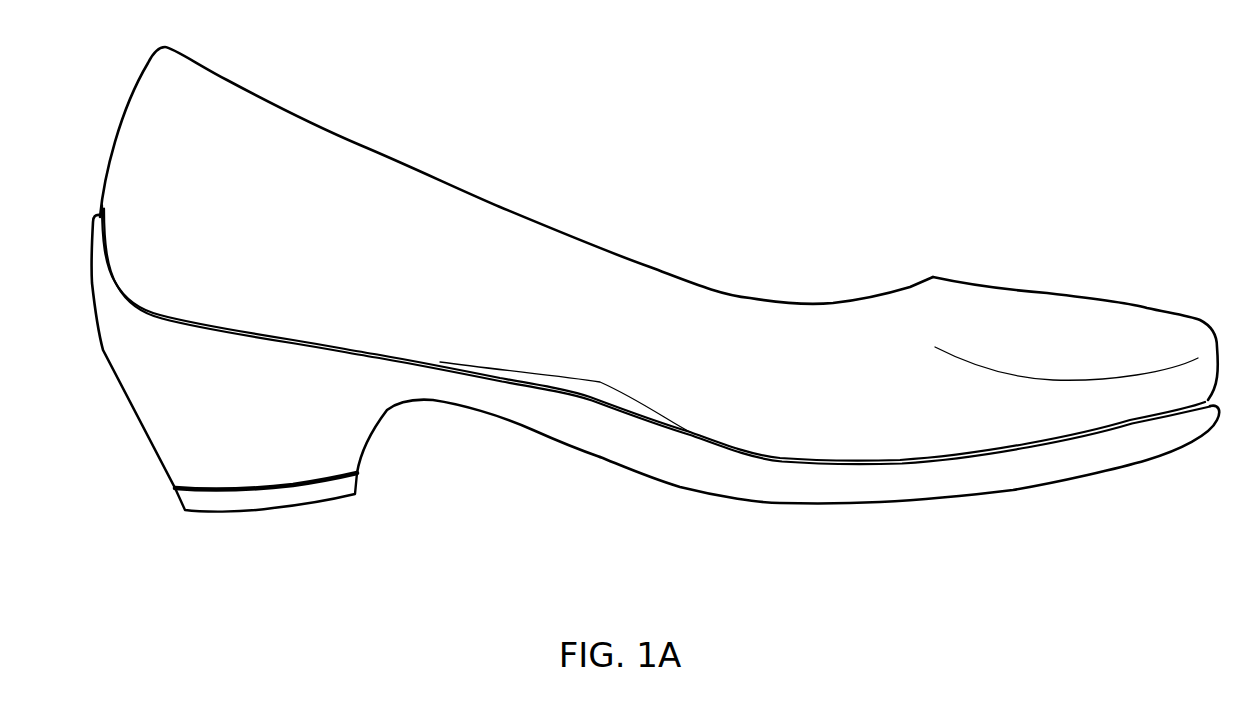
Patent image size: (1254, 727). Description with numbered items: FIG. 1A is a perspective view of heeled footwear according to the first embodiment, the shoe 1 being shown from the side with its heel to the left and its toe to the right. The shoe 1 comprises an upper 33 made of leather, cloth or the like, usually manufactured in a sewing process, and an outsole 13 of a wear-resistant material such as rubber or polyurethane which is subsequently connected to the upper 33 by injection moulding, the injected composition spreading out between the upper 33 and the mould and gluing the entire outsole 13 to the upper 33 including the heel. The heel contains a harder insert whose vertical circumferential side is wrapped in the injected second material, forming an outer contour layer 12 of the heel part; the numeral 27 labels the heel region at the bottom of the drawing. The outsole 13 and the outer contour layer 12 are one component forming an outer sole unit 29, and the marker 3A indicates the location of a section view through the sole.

The shoe 1 is at (797, 124).
The outer contour layer 12 is at (142, 392).
The outsole 13 is at (868, 487).
The heel 27 is at (273, 502).
The outer sole unit 29 is at (532, 418).
The upper 33 is at (1042, 313).
The section line for FIG. 3A is at (320, 448).